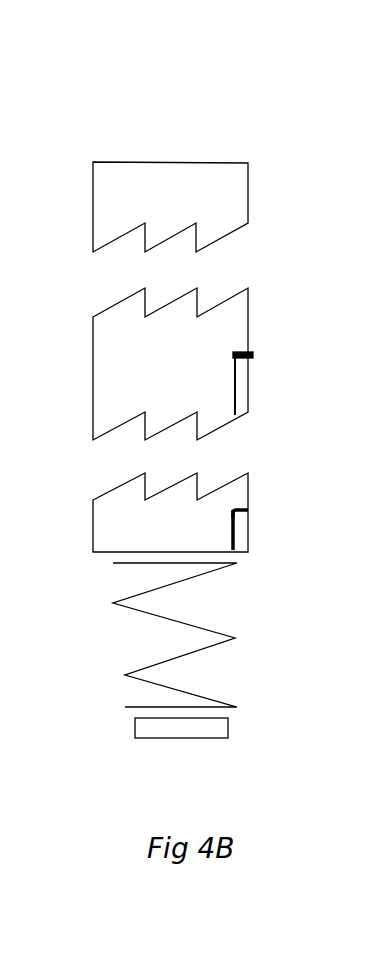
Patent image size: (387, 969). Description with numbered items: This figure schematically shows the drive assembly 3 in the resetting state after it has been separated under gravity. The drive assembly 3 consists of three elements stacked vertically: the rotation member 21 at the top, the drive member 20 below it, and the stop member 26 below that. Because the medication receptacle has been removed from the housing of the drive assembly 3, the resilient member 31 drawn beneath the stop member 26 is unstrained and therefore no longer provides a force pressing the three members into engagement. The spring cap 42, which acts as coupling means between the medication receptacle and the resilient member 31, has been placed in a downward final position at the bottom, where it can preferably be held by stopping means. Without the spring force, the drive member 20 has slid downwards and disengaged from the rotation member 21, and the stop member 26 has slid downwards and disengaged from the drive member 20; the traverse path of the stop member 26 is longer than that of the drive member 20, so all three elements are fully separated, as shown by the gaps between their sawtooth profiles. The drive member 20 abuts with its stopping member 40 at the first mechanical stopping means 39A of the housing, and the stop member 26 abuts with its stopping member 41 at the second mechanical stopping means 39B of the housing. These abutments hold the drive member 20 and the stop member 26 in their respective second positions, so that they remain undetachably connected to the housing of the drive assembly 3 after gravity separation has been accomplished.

The drive assembly 3 is at (138, 101).
The rotation member 21 is at (232, 195).
The drive member 20 is at (233, 335).
The first mechanical stopping means 39A is at (253, 357).
The stopping member 40 is at (245, 372).
The stop member 26 is at (237, 492).
The second mechanical stopping means 39B is at (248, 513).
The stopping member 41 is at (243, 540).
The resilient member 31 is at (232, 628).
The spring cap 42 is at (215, 732).